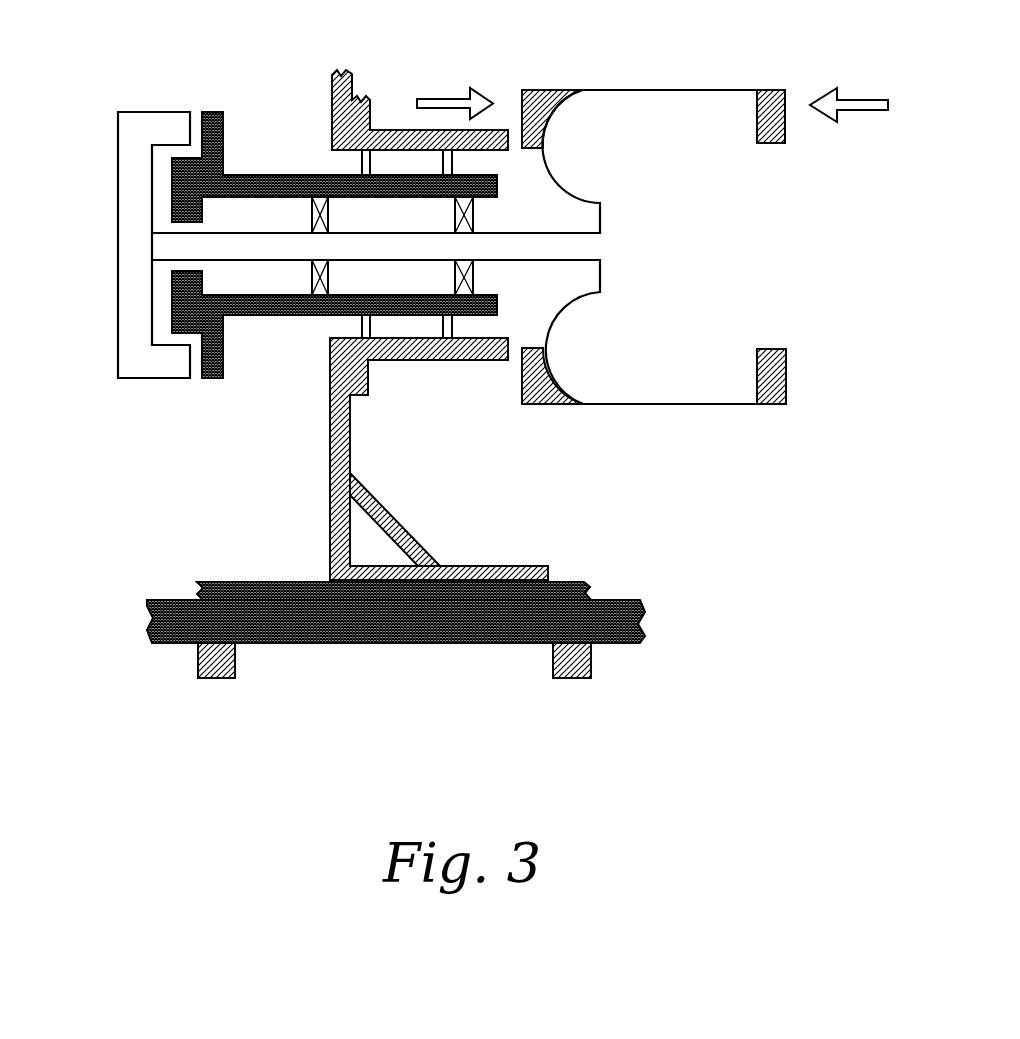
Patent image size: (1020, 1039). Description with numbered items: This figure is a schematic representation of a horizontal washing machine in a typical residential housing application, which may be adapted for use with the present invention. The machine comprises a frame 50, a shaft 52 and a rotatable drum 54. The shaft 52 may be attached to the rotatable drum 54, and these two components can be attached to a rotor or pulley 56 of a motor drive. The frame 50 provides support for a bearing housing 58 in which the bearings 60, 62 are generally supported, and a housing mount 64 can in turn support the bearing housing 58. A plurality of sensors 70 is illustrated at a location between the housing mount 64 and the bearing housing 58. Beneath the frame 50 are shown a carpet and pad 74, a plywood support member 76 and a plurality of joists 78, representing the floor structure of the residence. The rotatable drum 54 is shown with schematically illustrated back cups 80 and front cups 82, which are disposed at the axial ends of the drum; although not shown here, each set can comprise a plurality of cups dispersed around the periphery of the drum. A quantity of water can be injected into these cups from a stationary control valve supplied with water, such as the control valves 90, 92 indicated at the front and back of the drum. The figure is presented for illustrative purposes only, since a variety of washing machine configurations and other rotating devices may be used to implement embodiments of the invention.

The frame 50 is at (330, 435).
The shaft 52 is at (556, 242).
The rotatable drum 54 is at (706, 404).
The rotor or pulley 56 is at (128, 246).
The bearing housing 58 is at (214, 378).
The bearing 60 is at (312, 213).
The bearing 62 is at (455, 212).
The housing mount 64 is at (386, 130).
The sensors 70 is at (362, 163).
The carpet and pad 74 is at (266, 582).
The plywood support member 76 is at (172, 600).
The joists 78 is at (216, 678).
The back cups 80 is at (522, 378).
The front cups 82 is at (786, 385).
The stationary control valve 90 is at (478, 88).
The stationary control valve 92 is at (816, 88).